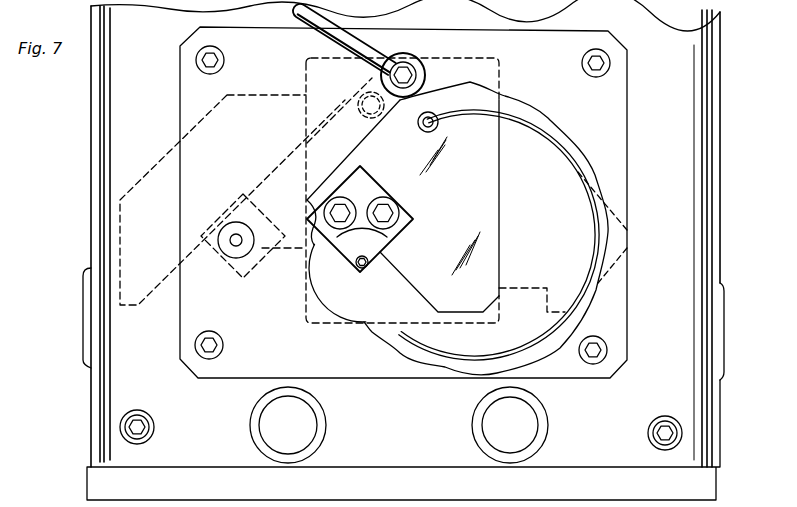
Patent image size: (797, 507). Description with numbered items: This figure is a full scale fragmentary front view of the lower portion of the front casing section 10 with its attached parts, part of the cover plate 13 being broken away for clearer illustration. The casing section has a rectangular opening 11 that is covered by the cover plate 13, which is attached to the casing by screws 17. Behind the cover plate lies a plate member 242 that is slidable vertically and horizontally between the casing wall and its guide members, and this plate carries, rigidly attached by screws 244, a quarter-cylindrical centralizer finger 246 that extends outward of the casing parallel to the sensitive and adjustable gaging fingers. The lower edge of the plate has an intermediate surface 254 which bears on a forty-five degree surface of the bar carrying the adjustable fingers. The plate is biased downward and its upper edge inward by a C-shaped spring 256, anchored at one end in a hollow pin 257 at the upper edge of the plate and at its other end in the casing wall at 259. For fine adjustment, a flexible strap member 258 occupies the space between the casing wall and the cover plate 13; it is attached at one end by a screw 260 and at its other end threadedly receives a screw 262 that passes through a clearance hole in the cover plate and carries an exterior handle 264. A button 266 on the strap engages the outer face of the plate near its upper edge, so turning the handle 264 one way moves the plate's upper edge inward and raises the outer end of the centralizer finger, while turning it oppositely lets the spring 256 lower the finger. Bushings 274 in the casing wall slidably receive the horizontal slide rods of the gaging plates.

The front casing half-section 10 is at (712, 222).
The rectangular opening 11 is at (487, 215).
The cover plate 13 is at (626, 158).
The screws 17 is at (198, 64).
The plate member 242 is at (448, 310).
The screws 244 is at (382, 200).
The centralizer finger 246 is at (357, 265).
The intermediate surface 254 is at (392, 282).
The C-shaped spring 256 is at (495, 358).
The hollow pin 257 is at (438, 123).
The flexible strap member 258 is at (286, 164).
The spring anchorage in casing wall 259 is at (389, 334).
The screw 260 is at (233, 236).
The screw 262 is at (406, 70).
The handle 264 is at (345, 32).
The button 266 is at (360, 97).
The bushing 274 is at (538, 424).